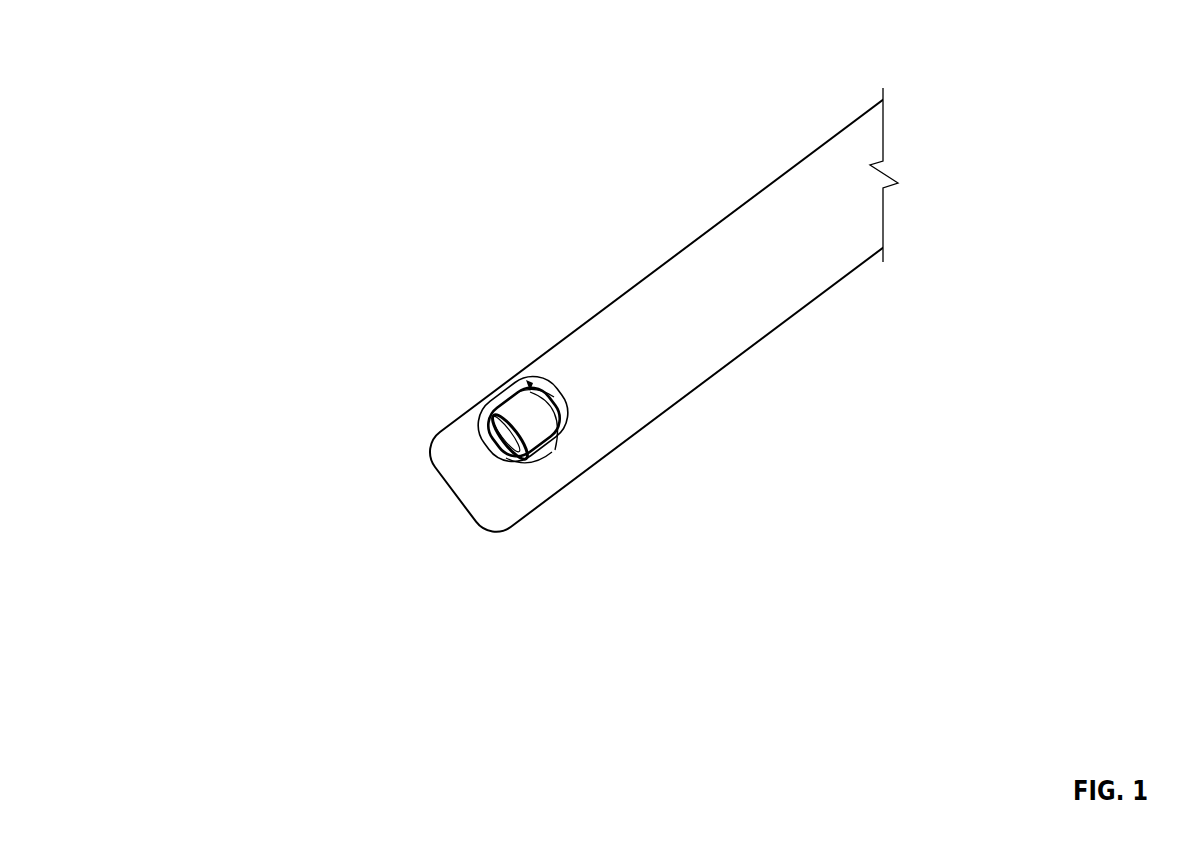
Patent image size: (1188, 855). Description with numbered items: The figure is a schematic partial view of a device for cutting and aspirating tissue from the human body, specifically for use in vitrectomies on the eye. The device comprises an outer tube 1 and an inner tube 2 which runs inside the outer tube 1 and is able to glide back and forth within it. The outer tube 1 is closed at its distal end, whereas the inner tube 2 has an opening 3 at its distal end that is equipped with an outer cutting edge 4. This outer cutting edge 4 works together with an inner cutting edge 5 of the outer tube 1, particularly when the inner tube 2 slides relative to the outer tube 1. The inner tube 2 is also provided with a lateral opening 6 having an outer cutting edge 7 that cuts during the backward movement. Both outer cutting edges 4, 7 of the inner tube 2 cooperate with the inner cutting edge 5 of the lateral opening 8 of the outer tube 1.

The outer tube 1 is at (742, 204).
The inner tube 2 is at (511, 409).
The opening 3 is at (504, 440).
The outer cutting edge 4 is at (524, 437).
The inner cutting edge 5 is at (480, 420).
The lateral opening 6 is at (546, 409).
The outer cutting edge 7 is at (545, 430).
The lateral opening 8 is at (529, 383).